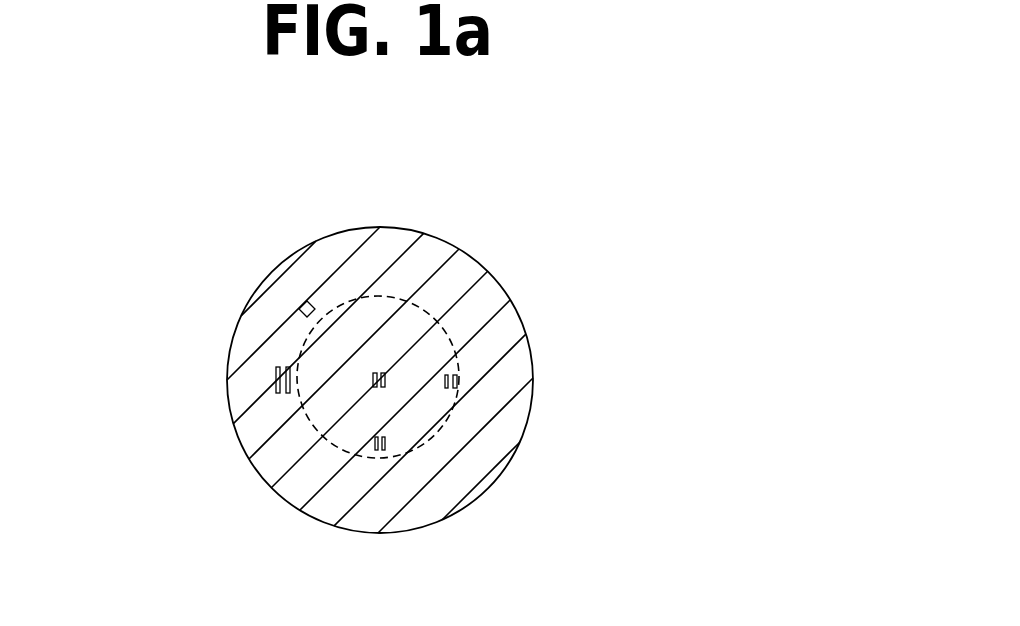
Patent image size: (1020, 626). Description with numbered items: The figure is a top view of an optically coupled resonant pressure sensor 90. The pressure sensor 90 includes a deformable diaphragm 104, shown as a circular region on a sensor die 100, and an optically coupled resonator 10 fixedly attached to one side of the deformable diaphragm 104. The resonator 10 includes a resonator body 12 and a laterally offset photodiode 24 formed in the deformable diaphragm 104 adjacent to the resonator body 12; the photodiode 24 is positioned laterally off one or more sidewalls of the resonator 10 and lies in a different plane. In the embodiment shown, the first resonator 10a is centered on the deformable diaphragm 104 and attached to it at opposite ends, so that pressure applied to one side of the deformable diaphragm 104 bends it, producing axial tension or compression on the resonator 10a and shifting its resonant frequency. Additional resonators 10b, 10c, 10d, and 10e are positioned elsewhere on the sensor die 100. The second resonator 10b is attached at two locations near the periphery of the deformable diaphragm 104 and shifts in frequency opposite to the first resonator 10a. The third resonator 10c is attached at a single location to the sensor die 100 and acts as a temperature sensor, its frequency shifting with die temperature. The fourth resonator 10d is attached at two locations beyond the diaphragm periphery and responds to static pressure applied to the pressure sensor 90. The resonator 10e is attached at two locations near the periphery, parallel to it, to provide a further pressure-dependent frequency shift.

The optically coupled resonant pressure sensor 90 is at (148, 151).
The sensor die 100 is at (408, 228).
The deformable diaphragm 104 is at (385, 382).
The optically coupled resonator 10 is at (385, 381).
The first resonator 10a is at (385, 381).
The second resonator 10b is at (386, 447).
The third resonator 10c is at (306, 301).
The fourth resonator 10d is at (276, 380).
The resonator 10e is at (457, 383).
The resonator body 12 is at (385, 381).
The photodiode 24 is at (385, 381).